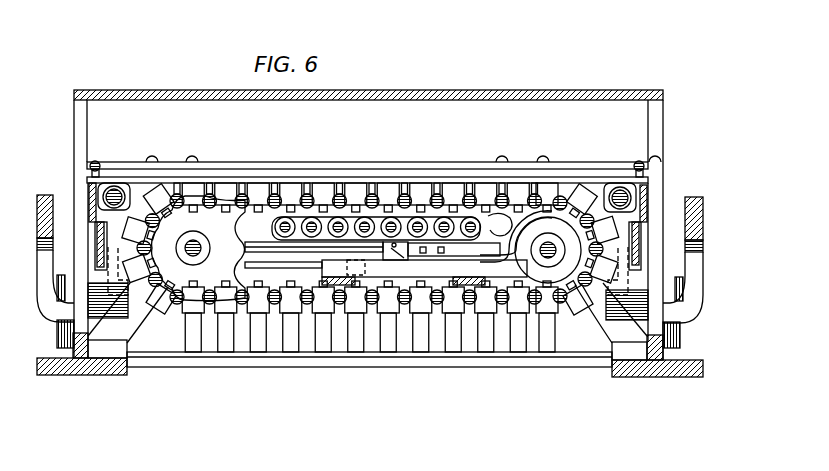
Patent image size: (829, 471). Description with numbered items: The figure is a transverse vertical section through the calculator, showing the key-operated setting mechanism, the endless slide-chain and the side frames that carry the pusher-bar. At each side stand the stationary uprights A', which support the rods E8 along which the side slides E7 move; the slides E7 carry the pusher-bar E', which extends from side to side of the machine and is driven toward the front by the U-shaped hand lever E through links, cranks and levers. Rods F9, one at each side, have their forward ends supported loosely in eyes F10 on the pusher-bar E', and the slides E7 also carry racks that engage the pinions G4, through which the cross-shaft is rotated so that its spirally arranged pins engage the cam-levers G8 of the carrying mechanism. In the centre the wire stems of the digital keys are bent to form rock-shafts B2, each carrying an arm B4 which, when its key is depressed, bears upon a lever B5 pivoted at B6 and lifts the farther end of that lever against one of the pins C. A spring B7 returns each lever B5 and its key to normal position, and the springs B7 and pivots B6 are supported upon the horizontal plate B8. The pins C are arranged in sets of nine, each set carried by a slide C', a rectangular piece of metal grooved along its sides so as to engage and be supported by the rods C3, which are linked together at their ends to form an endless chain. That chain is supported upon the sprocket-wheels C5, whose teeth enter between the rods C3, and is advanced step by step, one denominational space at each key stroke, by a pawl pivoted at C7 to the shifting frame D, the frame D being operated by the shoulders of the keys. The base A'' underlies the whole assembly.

The stationary uprights A' is at (371, 225).
The base rail A'' is at (369, 375).
The rock-shafts B2 is at (339, 225).
The arm B4 is at (273, 228).
The lever B5 is at (516, 236).
The pivot B6 is at (398, 243).
The spring B7 is at (350, 250).
The horizontal plate B8 is at (402, 268).
The pins C is at (554, 173).
The slide C' is at (370, 268).
The rods C3 is at (307, 193).
The sprocket-wheels C5 is at (370, 258).
The pivot C7 is at (366, 248).
The frame D is at (100, 243).
The hand lever E is at (362, 271).
The pusher-bar E' is at (374, 163).
The side slides E7 is at (89, 190).
The rods E8 is at (120, 196).
The rods F9 is at (97, 162).
The eyes F10 is at (101, 167).
The pinions G4 is at (88, 305).
The cam-levers G8 is at (480, 330).